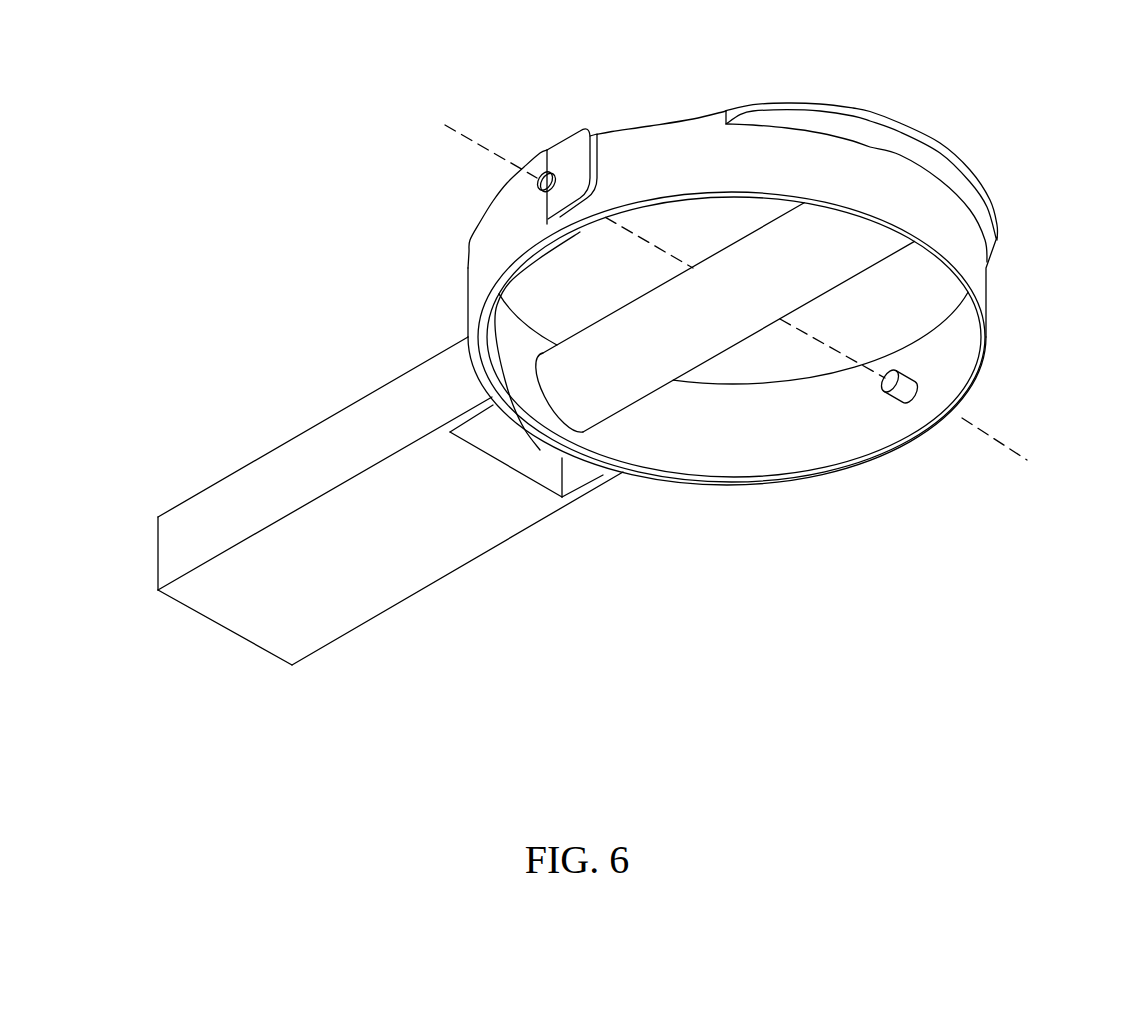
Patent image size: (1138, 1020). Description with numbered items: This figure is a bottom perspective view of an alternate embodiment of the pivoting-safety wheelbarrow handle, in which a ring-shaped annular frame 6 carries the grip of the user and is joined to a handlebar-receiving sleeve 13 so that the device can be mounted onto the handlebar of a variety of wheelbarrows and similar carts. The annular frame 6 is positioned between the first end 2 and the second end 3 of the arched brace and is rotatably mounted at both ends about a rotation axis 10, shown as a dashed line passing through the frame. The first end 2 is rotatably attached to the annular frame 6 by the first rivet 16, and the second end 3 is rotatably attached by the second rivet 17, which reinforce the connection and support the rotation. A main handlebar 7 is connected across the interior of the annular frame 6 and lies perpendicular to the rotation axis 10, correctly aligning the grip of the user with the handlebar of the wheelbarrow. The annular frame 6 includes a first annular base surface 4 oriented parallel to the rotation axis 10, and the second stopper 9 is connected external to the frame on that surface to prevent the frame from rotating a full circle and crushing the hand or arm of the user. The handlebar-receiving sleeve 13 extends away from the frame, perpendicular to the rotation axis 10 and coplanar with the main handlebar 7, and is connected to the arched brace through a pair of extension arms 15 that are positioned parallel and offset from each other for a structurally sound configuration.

The first end 2 is at (612, 131).
The second end 3 is at (967, 392).
The first annular base surface 4 is at (984, 338).
The annular frame 6 is at (980, 257).
The main handlebar 7 is at (870, 250).
The second stopper 9 is at (938, 156).
The rotation axis 10 is at (1025, 458).
The handlebar-receiving sleeve 13 is at (276, 436).
The pair of extension arms 15 is at (478, 407).
The first rivet 16 is at (550, 173).
The second rivet 17 is at (890, 386).